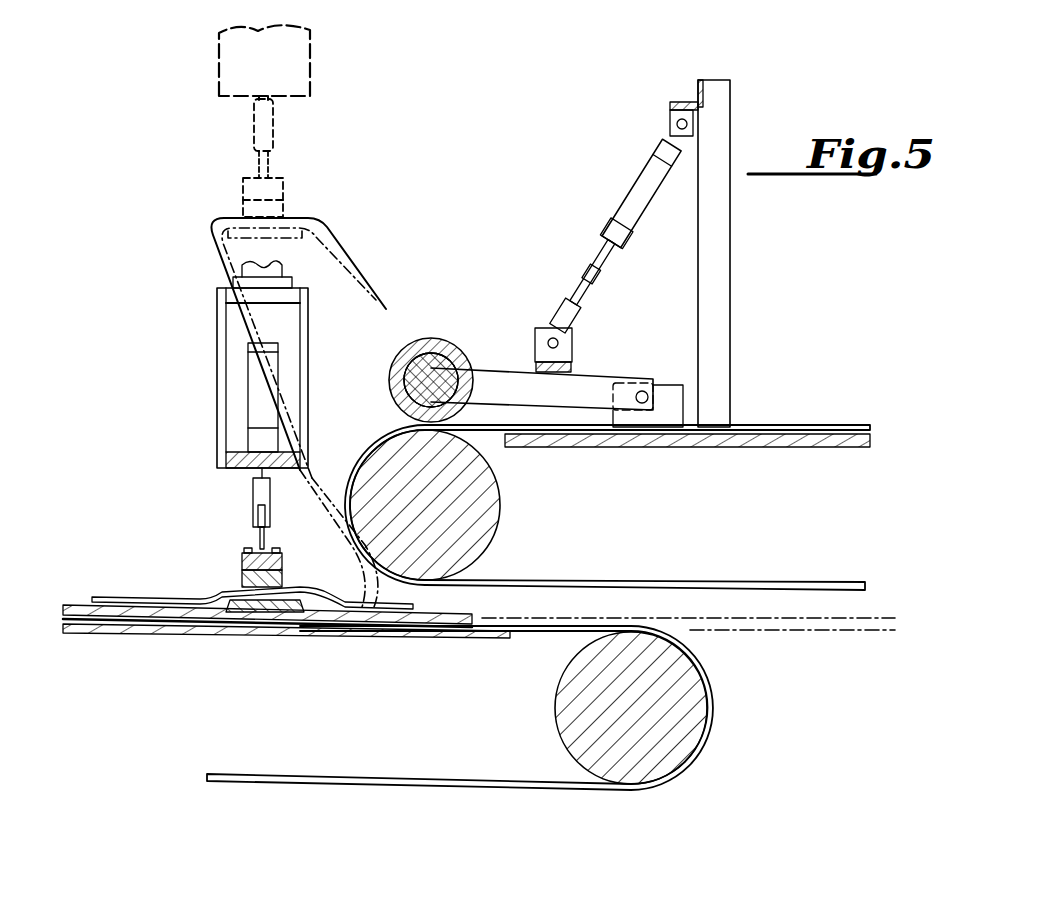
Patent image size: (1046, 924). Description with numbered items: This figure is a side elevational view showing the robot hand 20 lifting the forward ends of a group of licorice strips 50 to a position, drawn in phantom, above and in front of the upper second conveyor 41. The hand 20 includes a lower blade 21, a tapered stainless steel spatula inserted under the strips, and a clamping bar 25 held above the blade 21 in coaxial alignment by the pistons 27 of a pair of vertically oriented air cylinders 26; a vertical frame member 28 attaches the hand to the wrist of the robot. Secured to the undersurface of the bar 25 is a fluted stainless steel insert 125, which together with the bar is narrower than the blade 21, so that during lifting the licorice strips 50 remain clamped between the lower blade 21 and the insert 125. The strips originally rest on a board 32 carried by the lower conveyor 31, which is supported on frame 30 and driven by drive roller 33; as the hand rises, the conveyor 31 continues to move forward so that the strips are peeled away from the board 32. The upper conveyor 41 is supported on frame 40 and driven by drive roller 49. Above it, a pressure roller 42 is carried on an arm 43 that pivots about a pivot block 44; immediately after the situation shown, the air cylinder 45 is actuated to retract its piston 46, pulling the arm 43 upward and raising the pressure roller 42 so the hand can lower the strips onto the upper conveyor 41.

The robot hand 20 is at (241, 557).
The lower blade 21 is at (245, 642).
The clamping bar 25 is at (243, 556).
The air cylinders 26 is at (255, 408).
The pistons 27 is at (254, 118).
The vertical frame member 28 is at (308, 67).
The frame 30 is at (292, 640).
The conveyor 31 is at (154, 642).
The board 32 is at (112, 612).
The drive roller 33 is at (582, 692).
The frame 40 is at (762, 448).
The upper conveyor 41 is at (795, 430).
The pressure roller 42 is at (441, 345).
The arm 43 is at (581, 388).
The pivot block 44 is at (668, 398).
The air cylinder 45 is at (642, 192).
The piston 46 is at (588, 270).
The drive roller 49 is at (488, 503).
The licorice strips 50 is at (336, 238).
The fluted stainless steel insert 125 is at (243, 578).